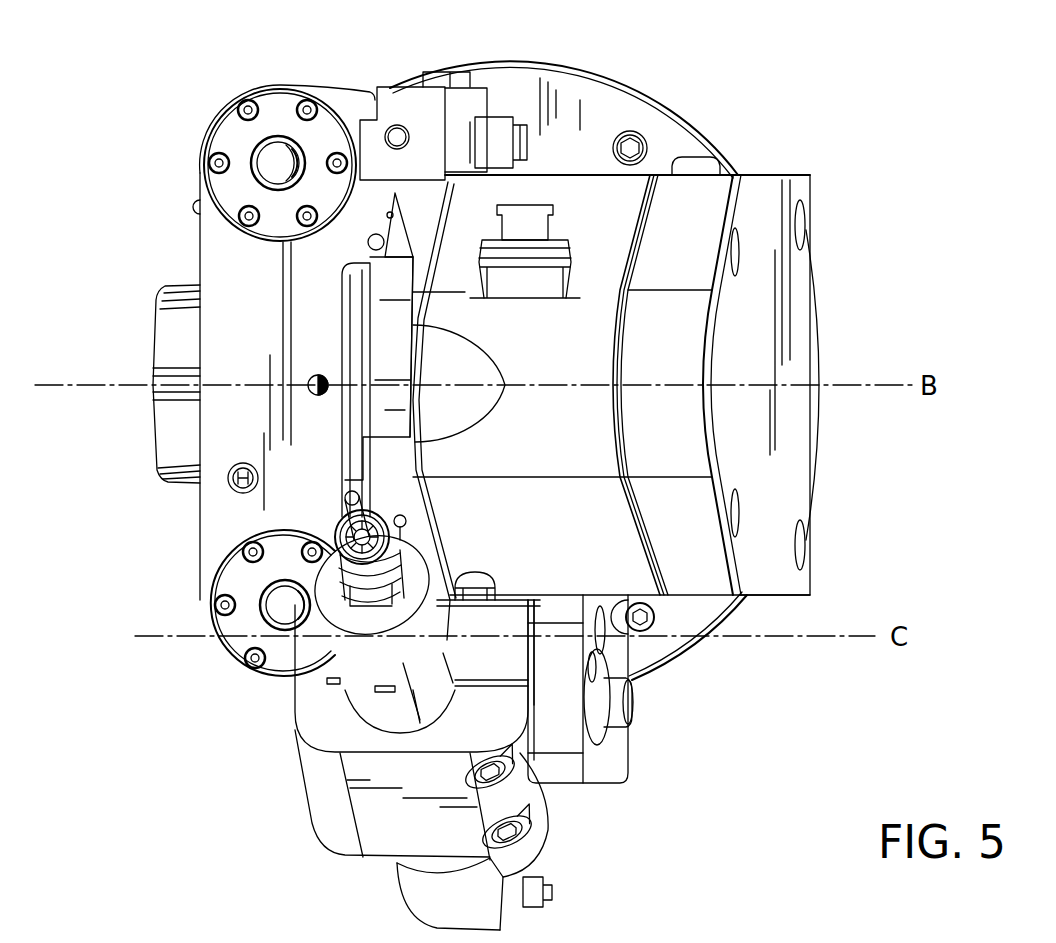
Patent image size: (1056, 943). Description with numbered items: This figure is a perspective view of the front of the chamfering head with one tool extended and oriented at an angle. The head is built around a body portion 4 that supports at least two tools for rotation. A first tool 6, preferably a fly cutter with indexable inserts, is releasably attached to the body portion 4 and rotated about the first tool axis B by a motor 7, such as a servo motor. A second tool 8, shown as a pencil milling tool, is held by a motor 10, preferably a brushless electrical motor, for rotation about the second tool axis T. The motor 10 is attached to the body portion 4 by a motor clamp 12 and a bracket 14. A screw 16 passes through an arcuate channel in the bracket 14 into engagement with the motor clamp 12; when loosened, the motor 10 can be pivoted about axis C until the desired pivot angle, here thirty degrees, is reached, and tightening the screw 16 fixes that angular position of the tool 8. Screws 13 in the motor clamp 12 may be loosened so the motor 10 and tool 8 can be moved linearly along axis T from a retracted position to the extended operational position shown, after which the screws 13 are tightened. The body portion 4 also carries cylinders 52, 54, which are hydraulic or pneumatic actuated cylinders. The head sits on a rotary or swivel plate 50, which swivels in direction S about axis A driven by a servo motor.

The body portion 4 is at (750, 305).
The first tool 6 is at (387, 330).
The motor 7 is at (170, 343).
The second tool 8 is at (352, 498).
The motor 10 is at (360, 673).
The motor clamp 12 is at (333, 807).
The screws 13 is at (490, 772).
The bracket 14 is at (613, 763).
The screw 16 is at (620, 705).
The rotary or swivel plate 50 is at (612, 113).
The cylinder 52 is at (222, 123).
The cylinder 54 is at (235, 578).